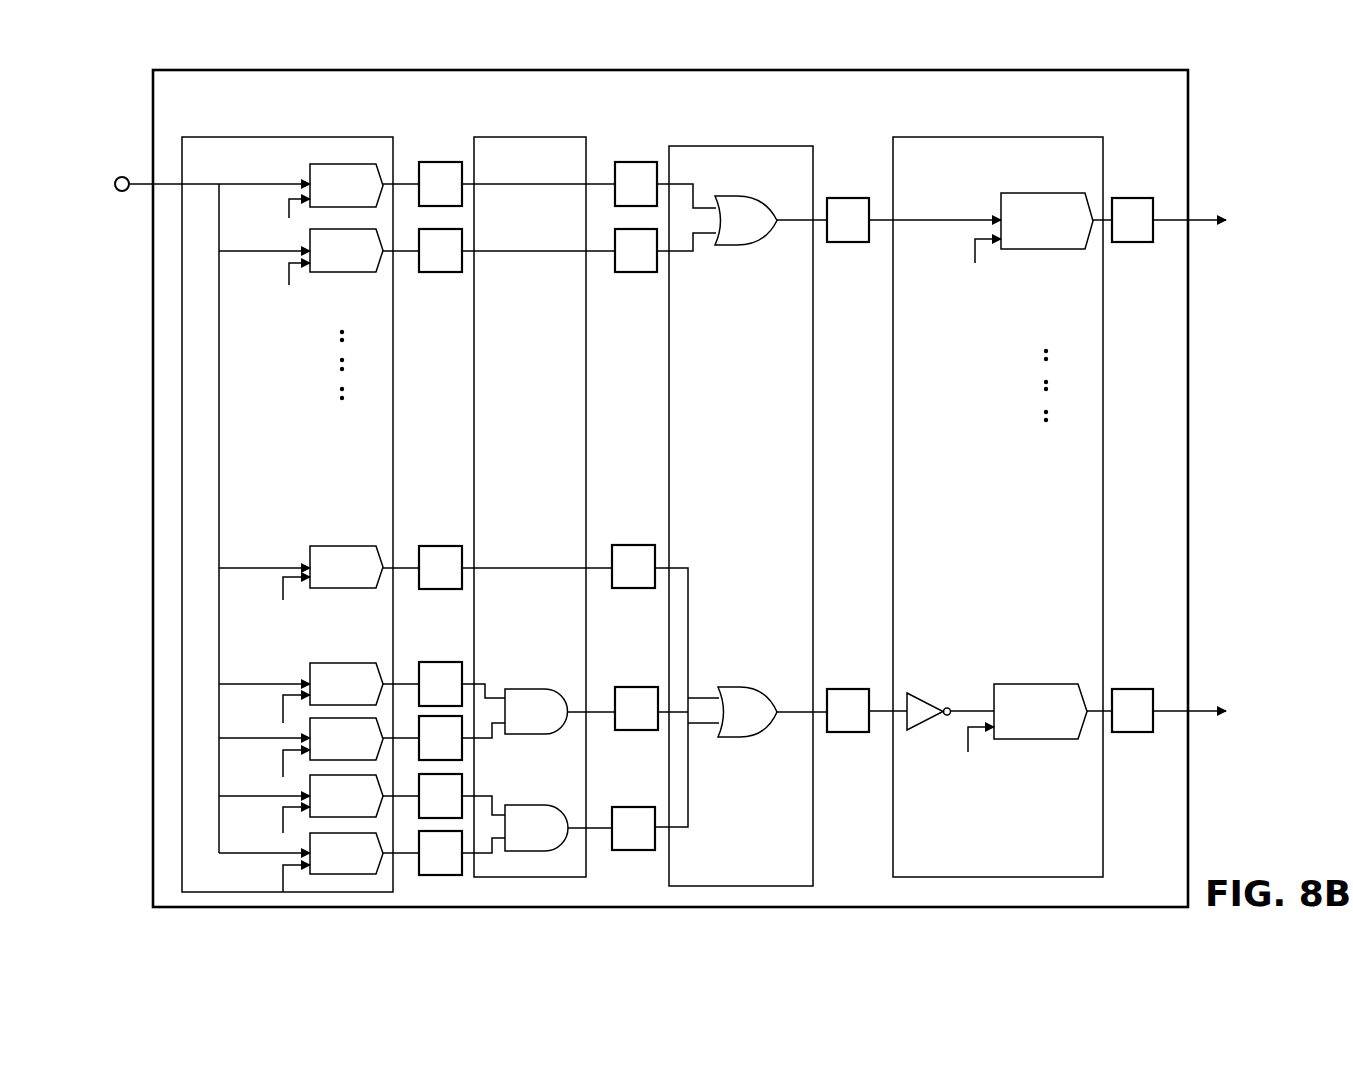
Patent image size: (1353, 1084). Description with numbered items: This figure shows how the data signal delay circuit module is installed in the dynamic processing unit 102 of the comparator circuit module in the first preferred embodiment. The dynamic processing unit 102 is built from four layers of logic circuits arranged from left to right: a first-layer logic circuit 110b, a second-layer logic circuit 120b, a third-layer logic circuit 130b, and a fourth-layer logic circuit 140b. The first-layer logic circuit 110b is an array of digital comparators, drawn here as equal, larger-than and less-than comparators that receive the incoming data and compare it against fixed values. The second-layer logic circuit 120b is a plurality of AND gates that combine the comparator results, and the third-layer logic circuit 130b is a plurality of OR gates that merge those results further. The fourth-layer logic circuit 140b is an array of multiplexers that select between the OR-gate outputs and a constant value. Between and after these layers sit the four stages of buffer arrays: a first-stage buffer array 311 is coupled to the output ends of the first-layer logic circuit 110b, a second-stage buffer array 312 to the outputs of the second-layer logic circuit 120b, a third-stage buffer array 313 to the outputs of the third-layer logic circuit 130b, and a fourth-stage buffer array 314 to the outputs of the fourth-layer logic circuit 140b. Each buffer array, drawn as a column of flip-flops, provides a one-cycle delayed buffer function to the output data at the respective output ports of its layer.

The dynamic processing unit 102 is at (151, 365).
The first-layer logic circuit 110b is at (296, 130).
The first-stage buffer array 311 is at (436, 153).
The second-layer logic circuit 120b is at (537, 143).
The second-stage buffer array 312 is at (627, 157).
The third-layer logic circuit 130b is at (738, 141).
The third-stage buffer array 313 is at (837, 199).
The fourth-layer logic circuit 140b is at (1005, 138).
The fourth-stage buffer array 314 is at (1127, 190).